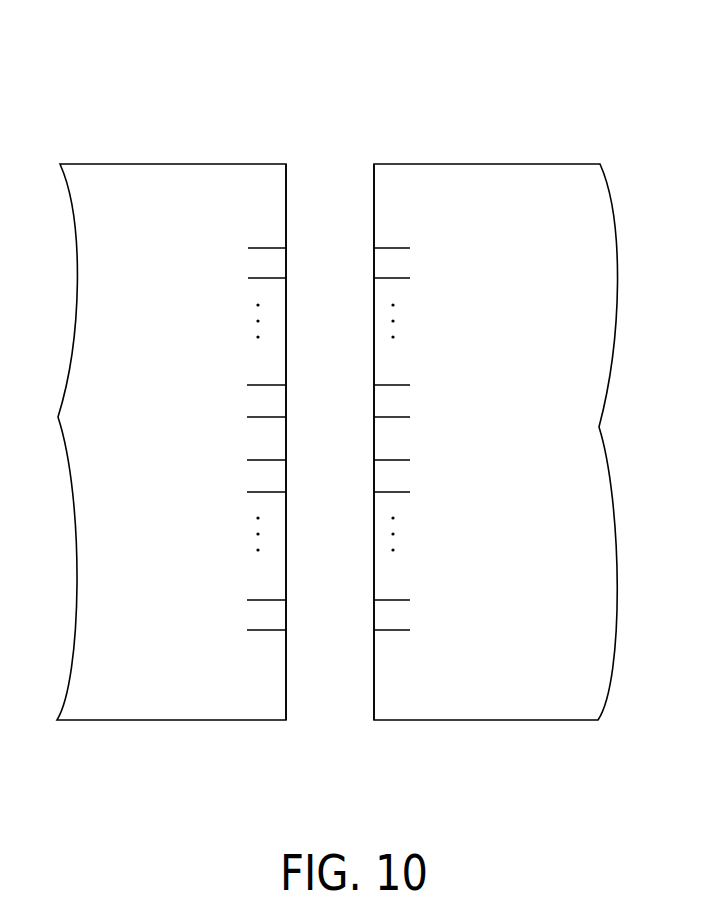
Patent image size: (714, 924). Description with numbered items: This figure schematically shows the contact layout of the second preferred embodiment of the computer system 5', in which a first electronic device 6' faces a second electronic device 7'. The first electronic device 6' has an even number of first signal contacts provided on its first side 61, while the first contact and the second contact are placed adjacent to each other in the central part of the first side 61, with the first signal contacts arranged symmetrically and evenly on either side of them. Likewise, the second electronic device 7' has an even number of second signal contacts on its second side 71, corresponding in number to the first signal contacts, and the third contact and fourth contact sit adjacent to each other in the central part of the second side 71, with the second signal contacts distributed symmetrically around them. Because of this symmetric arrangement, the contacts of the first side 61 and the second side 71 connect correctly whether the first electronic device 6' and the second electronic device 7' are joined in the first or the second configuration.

The pixel array / panel assembly 5' is at (337, 375).
The second electronic device 7' is at (177, 405).
The second side 71 is at (287, 186).
The first side 61 is at (373, 186).
The first electronic device 6' is at (490, 405).